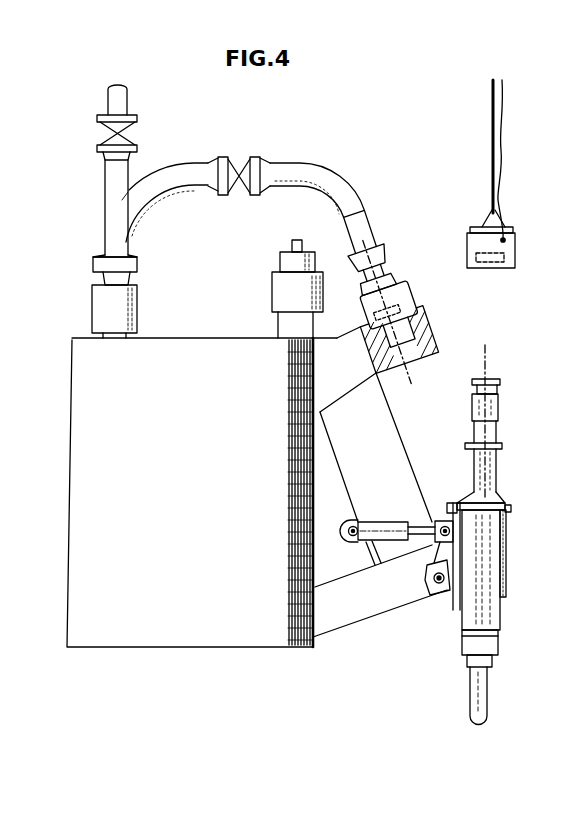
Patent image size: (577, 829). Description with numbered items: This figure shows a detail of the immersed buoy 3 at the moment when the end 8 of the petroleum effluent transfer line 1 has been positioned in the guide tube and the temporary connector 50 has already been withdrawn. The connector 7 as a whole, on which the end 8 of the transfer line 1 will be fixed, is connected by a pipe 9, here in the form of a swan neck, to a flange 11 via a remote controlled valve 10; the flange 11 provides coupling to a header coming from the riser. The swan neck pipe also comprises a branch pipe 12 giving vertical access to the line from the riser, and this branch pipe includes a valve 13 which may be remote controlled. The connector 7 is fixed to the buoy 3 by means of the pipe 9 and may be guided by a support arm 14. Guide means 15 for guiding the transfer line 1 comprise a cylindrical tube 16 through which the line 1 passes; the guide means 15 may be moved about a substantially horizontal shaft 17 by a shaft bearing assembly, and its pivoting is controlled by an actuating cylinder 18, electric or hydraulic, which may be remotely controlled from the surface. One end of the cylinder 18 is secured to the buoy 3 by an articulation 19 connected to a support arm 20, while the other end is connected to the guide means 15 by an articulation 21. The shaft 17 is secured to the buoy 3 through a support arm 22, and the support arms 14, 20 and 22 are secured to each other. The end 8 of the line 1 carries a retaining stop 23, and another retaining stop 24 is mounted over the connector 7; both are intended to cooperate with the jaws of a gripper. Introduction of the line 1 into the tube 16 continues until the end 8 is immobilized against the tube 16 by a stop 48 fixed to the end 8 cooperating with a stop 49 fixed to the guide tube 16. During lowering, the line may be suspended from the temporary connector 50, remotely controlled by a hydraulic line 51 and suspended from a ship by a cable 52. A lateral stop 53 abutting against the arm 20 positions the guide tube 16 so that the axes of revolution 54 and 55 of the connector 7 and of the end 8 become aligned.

The transfer line 1 is at (487, 690).
The buoy 3 is at (263, 648).
The connector 7 is at (390, 284).
The end of transfer line 8 is at (502, 421).
The pipe 9 is at (282, 168).
The remote controlled valve 10 is at (239, 160).
The flange 11 is at (93, 262).
The branch pipe 12 is at (105, 193).
The valve 13 is at (98, 121).
The support arm 14 is at (347, 380).
The guide means 15 is at (511, 614).
The cylindrical tube 16 is at (506, 572).
The shaft 17 is at (437, 587).
The actuating cylinder 18 is at (391, 523).
The articulation 19 is at (349, 520).
The support arm 20 is at (373, 461).
The articulation 21 is at (441, 521).
The support arm 22 is at (356, 608).
The retaining stop 23 is at (503, 446).
The retaining stop 24 is at (372, 252).
The stop 48 is at (501, 500).
The stop 49 is at (511, 511).
The temporary connector 50 is at (511, 255).
The hydraulic line 51 is at (503, 111).
The cable 52 is at (489, 111).
The lateral stop 53 is at (450, 503).
The axis of revolution 54 is at (414, 378).
The axis of revolution 55 is at (490, 367).